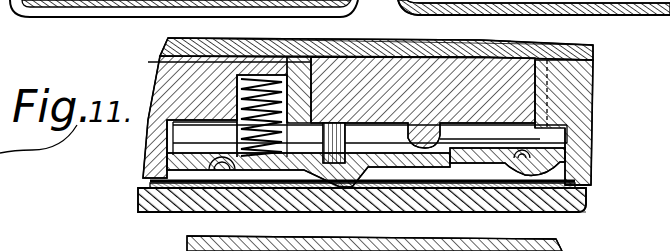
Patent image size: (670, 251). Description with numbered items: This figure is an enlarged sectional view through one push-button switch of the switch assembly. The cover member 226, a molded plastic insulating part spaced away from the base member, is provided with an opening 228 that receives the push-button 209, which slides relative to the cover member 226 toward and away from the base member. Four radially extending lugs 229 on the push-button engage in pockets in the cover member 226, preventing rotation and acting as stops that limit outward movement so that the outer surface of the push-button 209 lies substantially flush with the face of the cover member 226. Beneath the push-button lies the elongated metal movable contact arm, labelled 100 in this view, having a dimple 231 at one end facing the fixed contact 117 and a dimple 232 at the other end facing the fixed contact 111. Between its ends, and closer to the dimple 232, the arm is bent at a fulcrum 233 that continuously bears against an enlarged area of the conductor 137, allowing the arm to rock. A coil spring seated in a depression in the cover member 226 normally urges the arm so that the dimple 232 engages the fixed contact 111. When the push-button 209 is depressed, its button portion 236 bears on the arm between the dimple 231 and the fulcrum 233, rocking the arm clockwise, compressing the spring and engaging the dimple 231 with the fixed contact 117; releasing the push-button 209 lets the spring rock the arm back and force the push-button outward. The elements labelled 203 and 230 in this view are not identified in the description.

The slide rod 100 is at (450, 189).
The fixed contact 111 is at (167, 212).
The fixed contact 117 is at (573, 218).
The conductor 137 is at (286, 214).
The tube 203 is at (510, 42).
The push-button 209 is at (453, 40).
The cover member 226 is at (578, 93).
The opening 228 is at (334, 54).
The radially extending lugs 229 is at (585, 203).
The cavity 230 is at (240, 132).
The dimple 231 is at (553, 172).
The dimple 232 is at (228, 212).
The fulcrum 233 is at (357, 172).
The button portion 236 is at (160, 62).